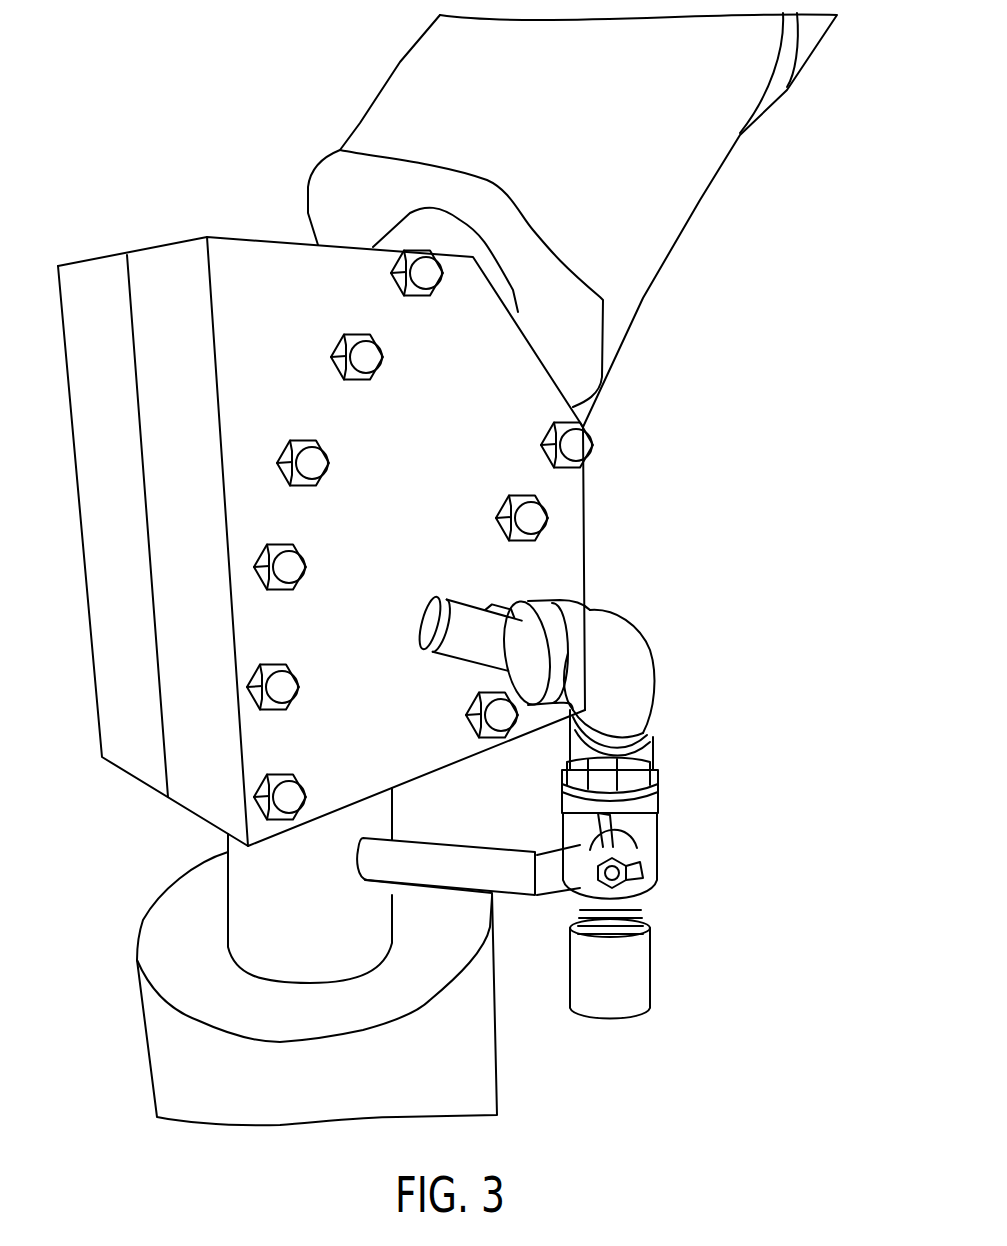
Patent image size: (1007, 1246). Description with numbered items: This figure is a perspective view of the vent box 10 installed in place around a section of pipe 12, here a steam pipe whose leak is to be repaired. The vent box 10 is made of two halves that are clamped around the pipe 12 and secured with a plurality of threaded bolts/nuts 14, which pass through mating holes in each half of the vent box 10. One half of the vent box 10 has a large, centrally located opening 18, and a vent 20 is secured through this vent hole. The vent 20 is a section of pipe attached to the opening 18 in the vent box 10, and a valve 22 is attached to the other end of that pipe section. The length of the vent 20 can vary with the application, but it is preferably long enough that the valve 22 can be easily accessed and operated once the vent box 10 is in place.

The vent box 10 is at (168, 156).
The pipe 12 is at (226, 842).
The threaded bolts/nuts 14 is at (590, 443).
The opening 18 is at (430, 597).
The vent 20 is at (595, 612).
The valve 22 is at (647, 860).